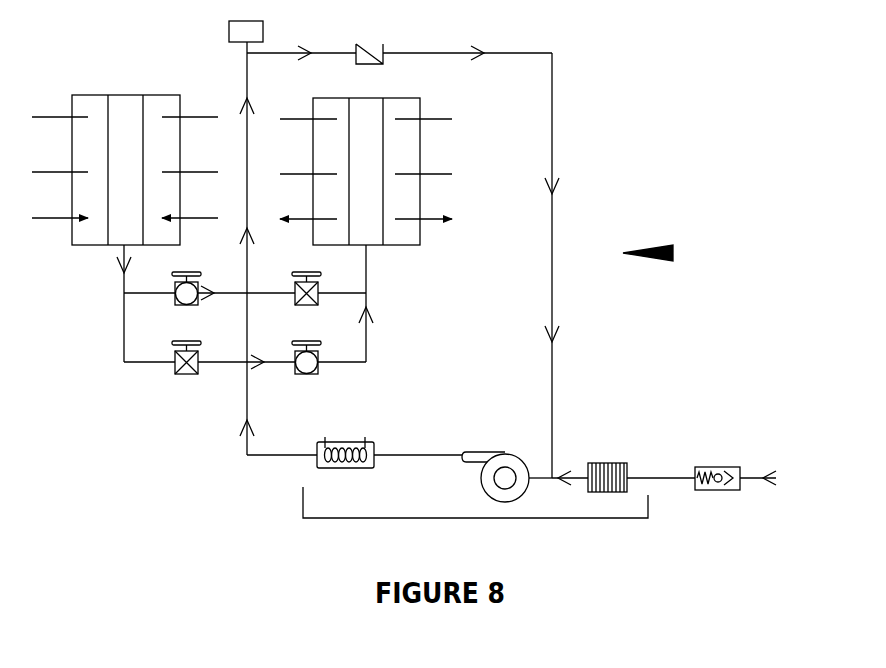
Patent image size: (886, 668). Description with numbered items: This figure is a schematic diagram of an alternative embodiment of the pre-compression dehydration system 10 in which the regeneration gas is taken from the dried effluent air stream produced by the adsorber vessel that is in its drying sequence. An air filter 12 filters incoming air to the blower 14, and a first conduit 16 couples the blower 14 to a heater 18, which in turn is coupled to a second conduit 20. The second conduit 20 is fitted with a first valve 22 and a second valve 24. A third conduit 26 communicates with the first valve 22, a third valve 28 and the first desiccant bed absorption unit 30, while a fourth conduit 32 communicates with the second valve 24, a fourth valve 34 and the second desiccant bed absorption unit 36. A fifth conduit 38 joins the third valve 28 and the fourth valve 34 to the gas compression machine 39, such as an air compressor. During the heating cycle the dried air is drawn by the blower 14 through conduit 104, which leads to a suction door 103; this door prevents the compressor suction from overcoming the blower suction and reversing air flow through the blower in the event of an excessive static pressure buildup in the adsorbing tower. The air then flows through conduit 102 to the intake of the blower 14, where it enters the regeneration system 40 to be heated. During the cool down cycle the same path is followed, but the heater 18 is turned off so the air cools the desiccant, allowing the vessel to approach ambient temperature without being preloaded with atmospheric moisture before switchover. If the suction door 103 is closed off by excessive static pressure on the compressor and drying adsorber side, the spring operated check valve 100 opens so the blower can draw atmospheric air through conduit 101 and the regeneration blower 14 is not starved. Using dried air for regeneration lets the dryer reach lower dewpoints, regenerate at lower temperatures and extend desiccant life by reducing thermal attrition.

The pre-compression dehydration system 10 is at (676, 253).
The air filter 12 is at (611, 462).
The blower 14 is at (512, 452).
The first conduit 16 is at (413, 455).
The heater 18 is at (345, 442).
The second conduit 20 is at (260, 456).
The first valve 22 is at (175, 373).
The second valve 24 is at (318, 374).
The third conduit 26 is at (123, 312).
The third valve 28 is at (199, 305).
The first desiccant bed absorption unit 30 is at (82, 247).
The fourth conduit 32 is at (368, 282).
The fourth valve 34 is at (295, 306).
The second desiccant bed absorption unit 36 is at (412, 98).
The fifth conduit 38 is at (249, 262).
The gas compression machine 39 is at (246, 31).
The regeneration system 40 is at (453, 520).
The spring operated check valve 100 is at (734, 467).
The conduit 101 is at (648, 477).
The conduit 102 is at (555, 352).
The suction door 103 is at (387, 46).
The conduit 104 is at (320, 52).